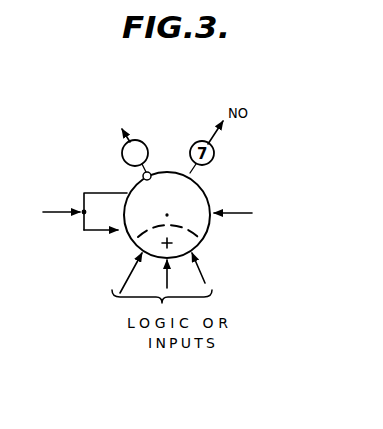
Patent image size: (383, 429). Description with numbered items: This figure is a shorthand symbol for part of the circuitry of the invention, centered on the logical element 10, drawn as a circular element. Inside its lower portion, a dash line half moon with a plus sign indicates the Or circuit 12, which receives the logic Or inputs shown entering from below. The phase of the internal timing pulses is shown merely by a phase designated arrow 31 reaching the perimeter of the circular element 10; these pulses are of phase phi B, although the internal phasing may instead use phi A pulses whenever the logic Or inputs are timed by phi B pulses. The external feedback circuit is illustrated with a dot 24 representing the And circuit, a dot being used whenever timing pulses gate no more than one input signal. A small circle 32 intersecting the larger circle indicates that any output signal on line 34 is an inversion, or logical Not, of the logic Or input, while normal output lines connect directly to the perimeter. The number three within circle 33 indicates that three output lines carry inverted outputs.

The logical element 10 is at (211, 194).
The Or circuit 12 is at (196, 240).
The And circuit 24 is at (84, 213).
The phase designated arrow 31 is at (235, 214).
The small circle 32 is at (150, 172).
The circle with encircled number 33 is at (123, 161).
The output line 34 is at (128, 139).